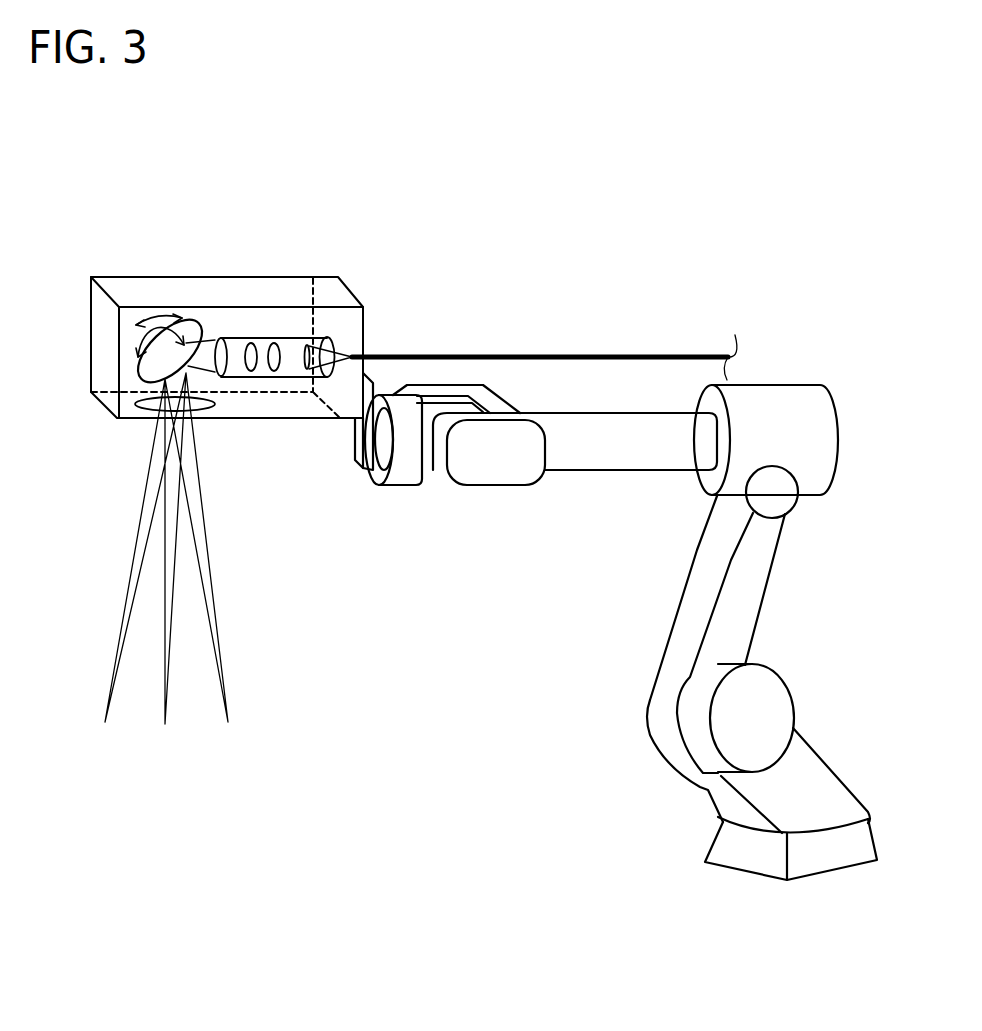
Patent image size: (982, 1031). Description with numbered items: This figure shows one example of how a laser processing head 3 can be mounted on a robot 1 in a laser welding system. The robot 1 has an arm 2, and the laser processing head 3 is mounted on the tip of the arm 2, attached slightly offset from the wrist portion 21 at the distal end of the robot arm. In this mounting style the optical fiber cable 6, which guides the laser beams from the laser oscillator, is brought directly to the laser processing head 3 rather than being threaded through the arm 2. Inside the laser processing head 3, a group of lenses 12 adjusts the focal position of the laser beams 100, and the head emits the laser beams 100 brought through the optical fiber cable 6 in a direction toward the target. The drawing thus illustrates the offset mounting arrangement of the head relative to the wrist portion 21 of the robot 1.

The robot 1 is at (635, 600).
The arm 2 is at (603, 470).
The laser processing head 3 is at (251, 299).
The optical fiber cable 6 is at (577, 354).
The group of lenses 12 is at (337, 338).
The wrist portion 21 is at (395, 488).
The laser beams 100 is at (215, 593).